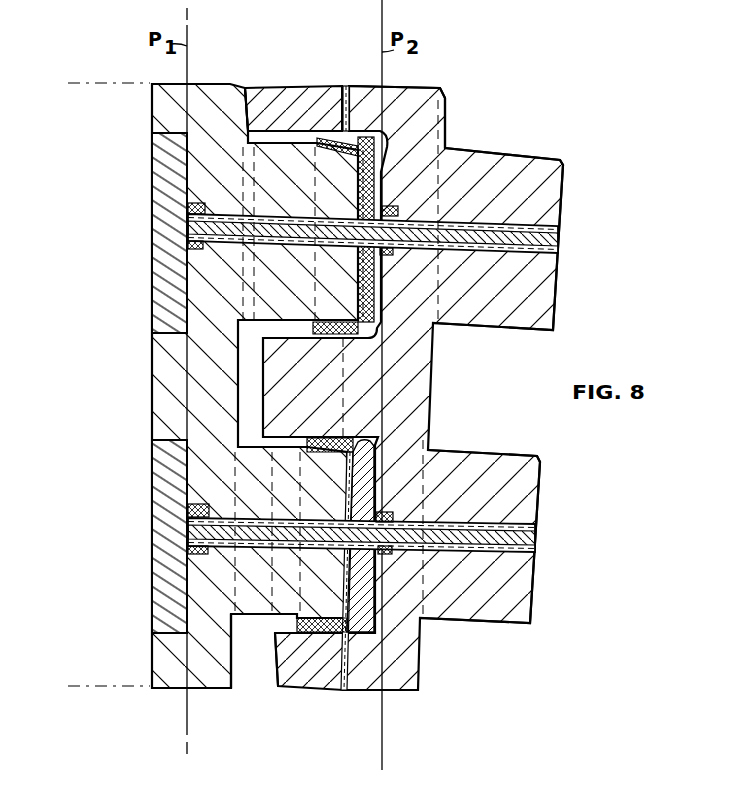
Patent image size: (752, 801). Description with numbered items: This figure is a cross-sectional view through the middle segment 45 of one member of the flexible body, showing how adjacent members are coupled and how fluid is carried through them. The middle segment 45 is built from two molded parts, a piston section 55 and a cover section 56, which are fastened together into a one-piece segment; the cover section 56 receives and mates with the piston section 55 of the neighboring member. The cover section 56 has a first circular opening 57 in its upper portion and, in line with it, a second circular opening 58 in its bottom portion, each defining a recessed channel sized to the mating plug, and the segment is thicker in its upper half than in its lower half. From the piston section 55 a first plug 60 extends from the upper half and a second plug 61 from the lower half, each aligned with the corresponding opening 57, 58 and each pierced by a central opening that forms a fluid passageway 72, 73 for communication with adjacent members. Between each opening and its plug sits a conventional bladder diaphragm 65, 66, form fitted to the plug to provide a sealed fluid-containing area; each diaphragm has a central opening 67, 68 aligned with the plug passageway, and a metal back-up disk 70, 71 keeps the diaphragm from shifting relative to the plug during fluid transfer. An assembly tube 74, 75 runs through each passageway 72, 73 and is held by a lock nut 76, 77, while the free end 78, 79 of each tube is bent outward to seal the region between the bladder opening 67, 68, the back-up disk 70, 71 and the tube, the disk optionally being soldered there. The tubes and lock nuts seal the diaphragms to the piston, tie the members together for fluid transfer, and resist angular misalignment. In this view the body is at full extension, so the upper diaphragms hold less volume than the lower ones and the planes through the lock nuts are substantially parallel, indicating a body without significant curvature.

The middle segment 45 is at (418, 690).
The piston section 55 is at (427, 103).
The cover section 56 is at (302, 98).
The first circular opening 57 is at (258, 100).
The second circular opening 58 is at (284, 633).
The first plug 60 is at (512, 167).
The second plug 61 is at (517, 468).
The bladder diaphragm 65 is at (346, 101).
The bladder diaphragm 66 is at (332, 690).
The bladder diaphragm opening 67 is at (363, 222).
The bladder diaphragm opening 68 is at (343, 525).
The metal back-up disk 70 is at (376, 140).
The metal back-up disk 71 is at (358, 482).
The fluid passageway 72 is at (271, 220).
The fluid passageway 73 is at (247, 527).
The assembly tube 74 is at (283, 243).
The assembly tube 75 is at (262, 546).
The lock nut 76 is at (200, 250).
The lock nut 77 is at (199, 510).
The free end of tube 78 is at (357, 255).
The free end of tube 79 is at (347, 547).